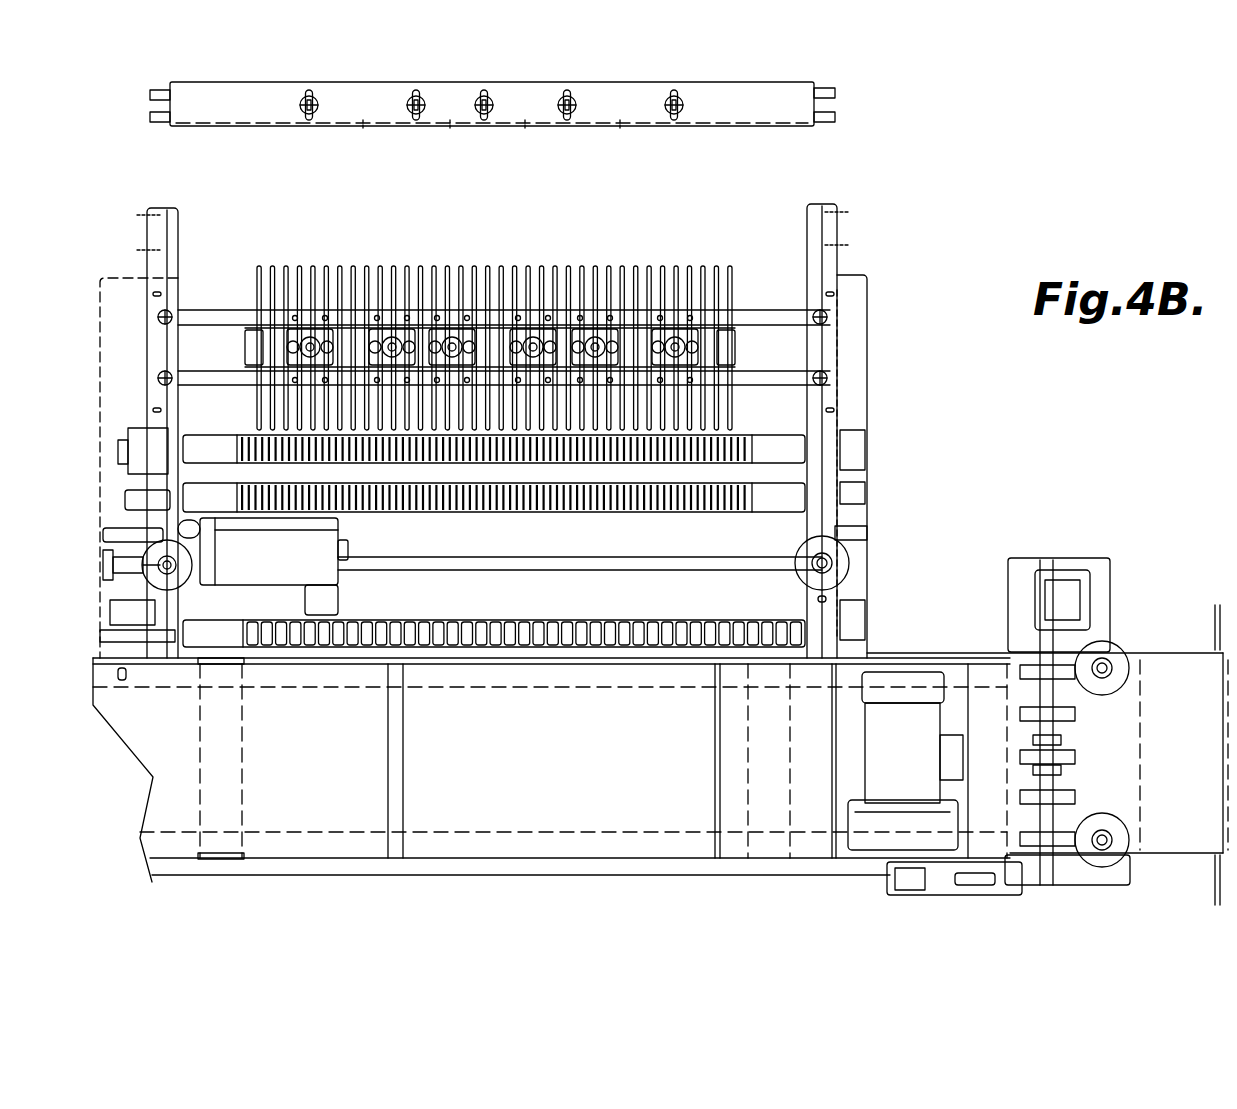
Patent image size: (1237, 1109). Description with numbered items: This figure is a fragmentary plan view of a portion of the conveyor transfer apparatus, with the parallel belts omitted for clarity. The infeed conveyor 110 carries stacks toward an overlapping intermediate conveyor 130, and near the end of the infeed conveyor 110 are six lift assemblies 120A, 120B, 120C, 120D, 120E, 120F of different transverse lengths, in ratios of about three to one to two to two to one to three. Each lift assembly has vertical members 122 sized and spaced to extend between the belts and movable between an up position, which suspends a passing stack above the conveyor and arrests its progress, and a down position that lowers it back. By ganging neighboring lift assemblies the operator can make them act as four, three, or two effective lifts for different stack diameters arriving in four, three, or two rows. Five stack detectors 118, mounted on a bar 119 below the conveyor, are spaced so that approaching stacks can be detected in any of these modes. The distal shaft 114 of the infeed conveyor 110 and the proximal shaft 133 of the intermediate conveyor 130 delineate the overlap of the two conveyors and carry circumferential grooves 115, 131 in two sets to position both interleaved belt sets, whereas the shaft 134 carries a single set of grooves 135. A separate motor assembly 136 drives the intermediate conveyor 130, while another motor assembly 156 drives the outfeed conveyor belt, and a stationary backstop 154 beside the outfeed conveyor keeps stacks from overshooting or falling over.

The infeed conveyor 110 is at (963, 235).
The distal shaft 114 is at (562, 517).
The circumferential grooves 115 is at (645, 510).
The stack detector 118 is at (304, 116).
The bar 119 is at (791, 108).
The lift assembly 120A is at (317, 298).
The lift assembly 120B is at (398, 298).
The lift assembly 120C is at (454, 296).
The lift assembly 120D is at (533, 280).
The lift assembly 120E is at (598, 280).
The lift assembly 120F is at (684, 280).
The vertical members 122 is at (285, 268).
The intermediate conveyor 130 is at (872, 565).
The circumferential grooves 131 is at (552, 466).
The proximal shaft 133 is at (552, 451).
The shaft 134 is at (562, 611).
The circumferential grooves 135 is at (601, 620).
The motor assembly 136 is at (340, 533).
The backstop 154 is at (512, 870).
The motor assembly 156 is at (920, 765).